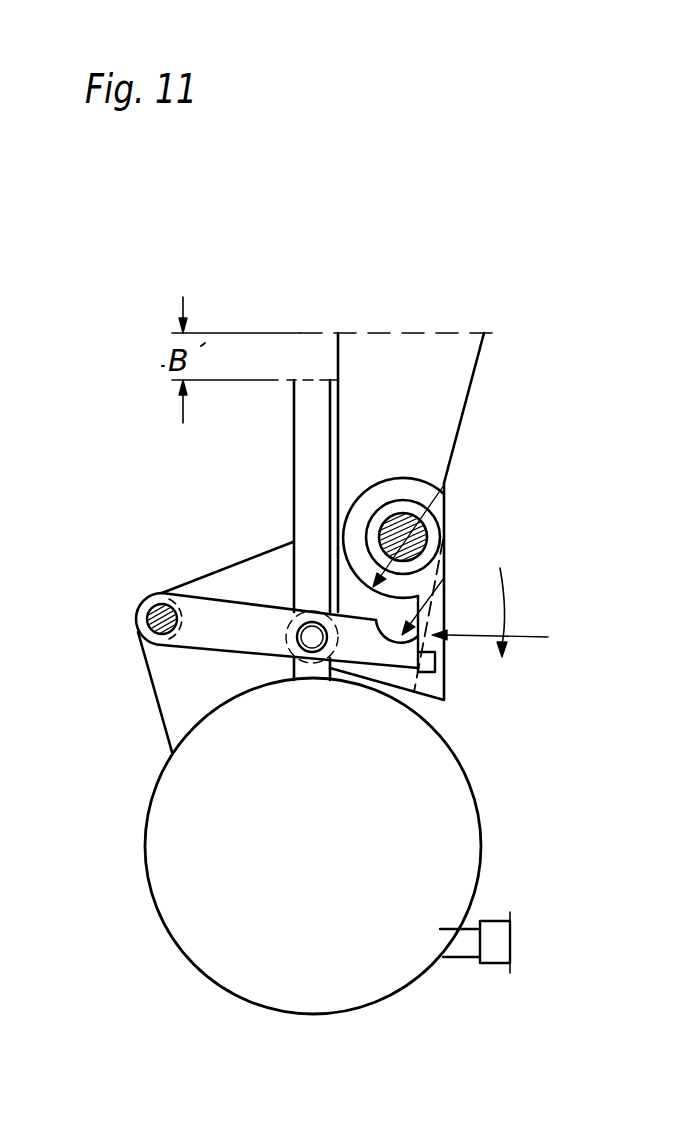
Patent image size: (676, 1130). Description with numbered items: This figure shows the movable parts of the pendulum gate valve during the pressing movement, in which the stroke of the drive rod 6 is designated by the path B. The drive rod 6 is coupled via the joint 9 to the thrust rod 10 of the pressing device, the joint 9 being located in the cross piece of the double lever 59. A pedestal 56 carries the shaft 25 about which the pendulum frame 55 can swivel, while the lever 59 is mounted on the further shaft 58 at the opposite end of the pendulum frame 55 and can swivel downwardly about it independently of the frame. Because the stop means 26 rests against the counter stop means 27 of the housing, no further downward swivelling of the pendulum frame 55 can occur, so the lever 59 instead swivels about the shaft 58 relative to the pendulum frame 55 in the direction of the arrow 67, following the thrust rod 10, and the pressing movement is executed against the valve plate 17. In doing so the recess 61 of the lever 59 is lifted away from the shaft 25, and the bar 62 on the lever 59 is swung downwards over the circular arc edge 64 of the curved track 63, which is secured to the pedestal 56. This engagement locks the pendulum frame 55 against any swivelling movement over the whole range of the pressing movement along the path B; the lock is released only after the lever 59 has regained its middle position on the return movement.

The drive rod 6 is at (306, 467).
The joint 9 is at (300, 622).
The thrust rod 10 is at (303, 670).
The valve plate 17 is at (455, 826).
The shaft 25 is at (444, 485).
The stop means 26 is at (467, 942).
The counter stop means 27 is at (497, 945).
The pendulum frame 55 is at (185, 713).
The pedestal 56 is at (462, 362).
The shaft 58 is at (150, 608).
The lever 59 is at (213, 637).
The recess 61 is at (444, 578).
The bar 62 is at (435, 668).
The curved track 63 is at (428, 522).
The circular arc edge 64 is at (504, 616).
The arrow 67 is at (505, 607).